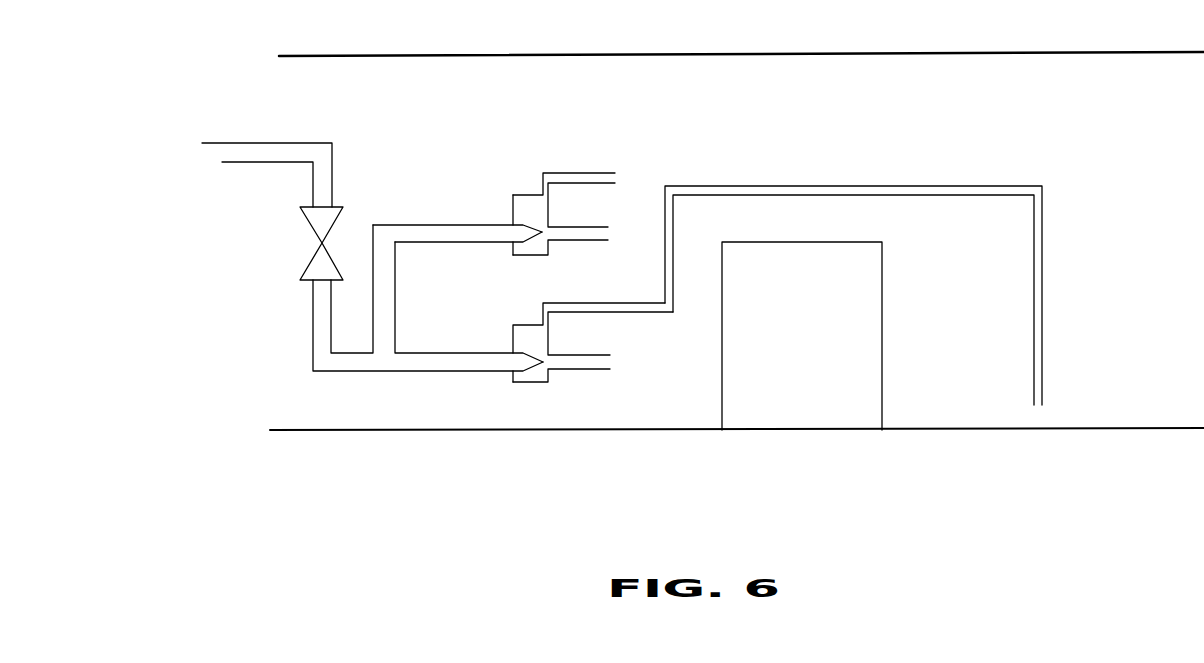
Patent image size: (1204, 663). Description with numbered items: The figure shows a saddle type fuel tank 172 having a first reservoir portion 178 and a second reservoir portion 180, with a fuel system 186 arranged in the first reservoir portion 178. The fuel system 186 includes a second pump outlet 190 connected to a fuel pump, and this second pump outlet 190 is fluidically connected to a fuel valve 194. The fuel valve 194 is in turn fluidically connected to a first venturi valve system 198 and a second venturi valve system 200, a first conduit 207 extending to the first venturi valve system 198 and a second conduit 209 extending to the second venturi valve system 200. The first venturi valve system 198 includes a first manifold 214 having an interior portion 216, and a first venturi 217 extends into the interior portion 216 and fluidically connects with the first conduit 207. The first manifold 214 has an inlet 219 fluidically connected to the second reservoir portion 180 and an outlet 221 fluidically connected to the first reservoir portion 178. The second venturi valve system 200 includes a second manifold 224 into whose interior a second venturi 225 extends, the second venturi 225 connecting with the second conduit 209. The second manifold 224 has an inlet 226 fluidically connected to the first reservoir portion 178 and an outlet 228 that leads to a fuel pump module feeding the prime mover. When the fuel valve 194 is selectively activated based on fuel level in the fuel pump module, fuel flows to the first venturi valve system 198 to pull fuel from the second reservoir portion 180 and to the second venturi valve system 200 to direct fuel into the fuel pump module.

The saddle type fuel tank 172 is at (992, 455).
The first reservoir portion 178 is at (365, 410).
The second reservoir portion 180 is at (937, 408).
The fuel system 186 is at (332, 392).
The second pump outlet 190 is at (245, 150).
The fuel valve 194 is at (322, 244).
The first venturi valve system 198 is at (570, 395).
The second venturi valve system 200 is at (636, 167).
The first conduit 207 is at (428, 366).
The second conduit 209 is at (435, 236).
The first manifold 214 is at (520, 318).
The interior portion 216 is at (521, 339).
The first venturi 217 is at (540, 365).
The inlet 219 is at (588, 313).
The outlet 221 is at (603, 370).
The second manifold 224 is at (512, 205).
The second venturi 225 is at (545, 250).
The inlet 226 is at (577, 173).
The outlet 228 is at (583, 226).